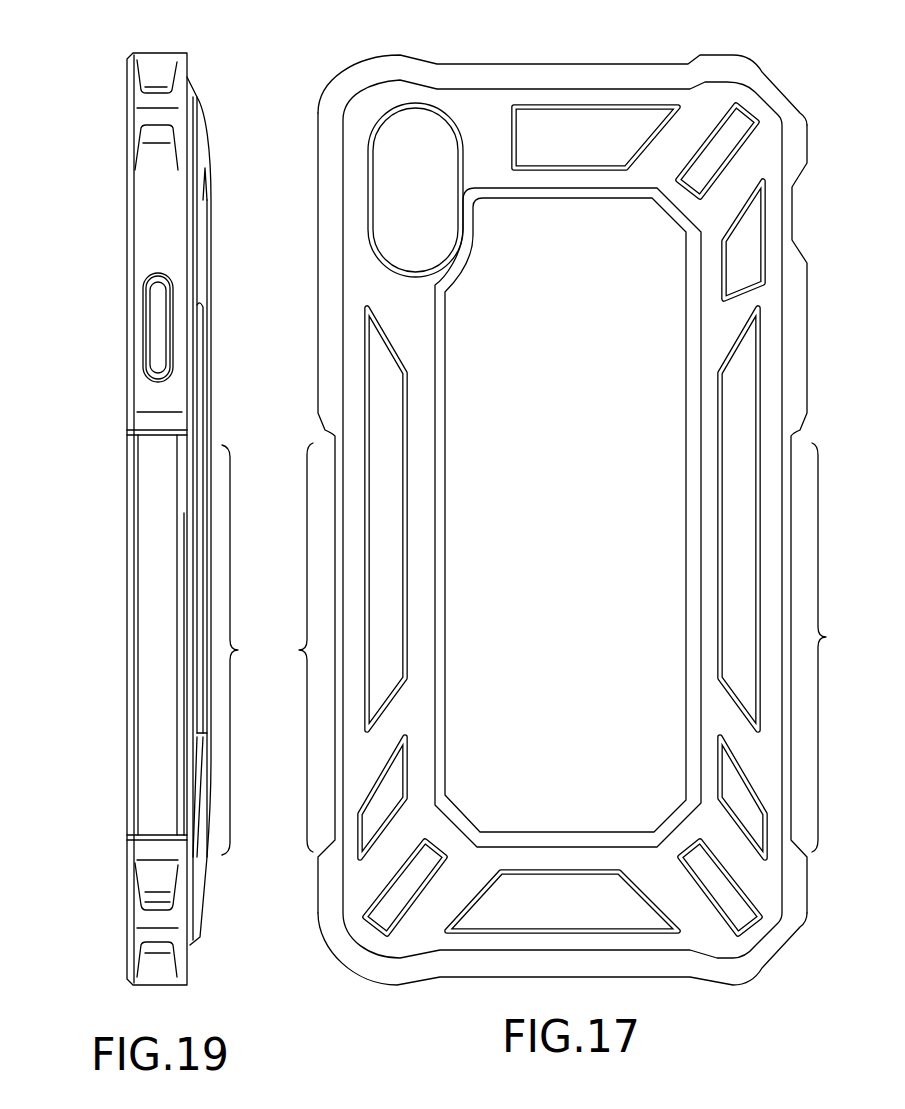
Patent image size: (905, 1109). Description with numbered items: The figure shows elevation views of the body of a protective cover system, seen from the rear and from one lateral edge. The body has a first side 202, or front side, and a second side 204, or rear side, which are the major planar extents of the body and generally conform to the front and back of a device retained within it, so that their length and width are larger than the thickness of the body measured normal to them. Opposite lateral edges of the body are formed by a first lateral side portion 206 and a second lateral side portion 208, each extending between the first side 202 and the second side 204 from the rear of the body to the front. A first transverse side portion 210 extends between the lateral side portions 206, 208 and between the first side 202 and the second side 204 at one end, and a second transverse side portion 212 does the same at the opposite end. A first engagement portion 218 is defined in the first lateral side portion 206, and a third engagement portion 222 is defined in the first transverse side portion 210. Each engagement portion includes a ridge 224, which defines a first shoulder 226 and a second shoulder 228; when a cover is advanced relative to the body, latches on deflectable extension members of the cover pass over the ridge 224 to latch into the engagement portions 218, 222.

In FIG. 17, the first side 202 is at (574, 566).
In FIG. 19, the first side 202 is at (205, 387).
In FIG. 19, the second side 204 is at (128, 357).
In FIG. 17, the first lateral side portion 206 is at (318, 234).
In FIG. 19, the first lateral side portion 206 is at (172, 193).
In FIG. 17, the second lateral side portion 208 is at (800, 250).
In FIG. 17, the first transverse side portion 210 is at (727, 63).
In FIG. 19, the first transverse side portion 210 is at (153, 57).
In FIG. 17, the second transverse side portion 212 is at (397, 978).
In FIG. 19, the second transverse side portion 212 is at (172, 975).
In FIG. 17, the first engagement portion 218 is at (826, 637).
In FIG. 19, the first engagement portion 218 is at (252, 650).
In FIG. 17, the third engagement portion 222 is at (707, 47).
In FIG. 19, the ridge 224 is at (153, 725).
In FIG. 19, the first shoulder 226 is at (135, 607).
In FIG. 19, the second shoulder 228 is at (177, 648).